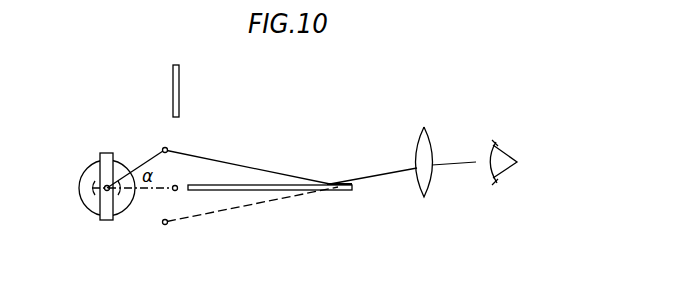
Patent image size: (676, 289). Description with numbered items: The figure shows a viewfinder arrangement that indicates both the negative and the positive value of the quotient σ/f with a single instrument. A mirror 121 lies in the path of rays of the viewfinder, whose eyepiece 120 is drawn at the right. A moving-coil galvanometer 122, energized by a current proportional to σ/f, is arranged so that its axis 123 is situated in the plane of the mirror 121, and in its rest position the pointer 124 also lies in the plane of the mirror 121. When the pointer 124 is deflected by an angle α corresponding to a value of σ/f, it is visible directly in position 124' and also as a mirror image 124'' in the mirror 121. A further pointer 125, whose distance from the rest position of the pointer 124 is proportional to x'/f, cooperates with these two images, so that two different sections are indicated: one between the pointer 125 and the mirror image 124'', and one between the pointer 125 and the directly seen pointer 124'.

The eyepiece 120 is at (428, 140).
The mirror 121 is at (307, 191).
The moving-coil galvanometer 122 is at (88, 200).
The axis 123 is at (105, 186).
The pointer 124 is at (198, 160).
The pointer in deflected position 124' is at (218, 153).
The mirror image of pointer 124'' is at (235, 227).
The pointer 125 is at (173, 78).